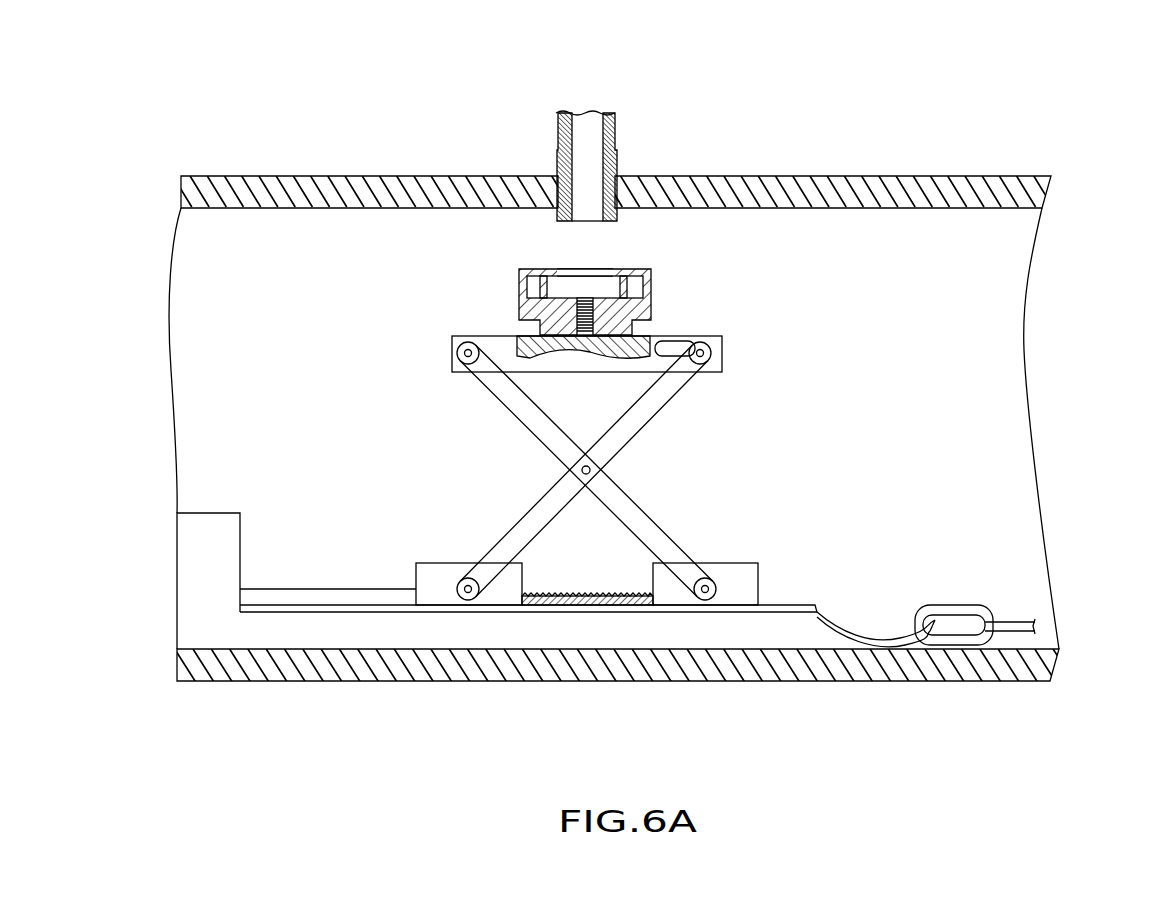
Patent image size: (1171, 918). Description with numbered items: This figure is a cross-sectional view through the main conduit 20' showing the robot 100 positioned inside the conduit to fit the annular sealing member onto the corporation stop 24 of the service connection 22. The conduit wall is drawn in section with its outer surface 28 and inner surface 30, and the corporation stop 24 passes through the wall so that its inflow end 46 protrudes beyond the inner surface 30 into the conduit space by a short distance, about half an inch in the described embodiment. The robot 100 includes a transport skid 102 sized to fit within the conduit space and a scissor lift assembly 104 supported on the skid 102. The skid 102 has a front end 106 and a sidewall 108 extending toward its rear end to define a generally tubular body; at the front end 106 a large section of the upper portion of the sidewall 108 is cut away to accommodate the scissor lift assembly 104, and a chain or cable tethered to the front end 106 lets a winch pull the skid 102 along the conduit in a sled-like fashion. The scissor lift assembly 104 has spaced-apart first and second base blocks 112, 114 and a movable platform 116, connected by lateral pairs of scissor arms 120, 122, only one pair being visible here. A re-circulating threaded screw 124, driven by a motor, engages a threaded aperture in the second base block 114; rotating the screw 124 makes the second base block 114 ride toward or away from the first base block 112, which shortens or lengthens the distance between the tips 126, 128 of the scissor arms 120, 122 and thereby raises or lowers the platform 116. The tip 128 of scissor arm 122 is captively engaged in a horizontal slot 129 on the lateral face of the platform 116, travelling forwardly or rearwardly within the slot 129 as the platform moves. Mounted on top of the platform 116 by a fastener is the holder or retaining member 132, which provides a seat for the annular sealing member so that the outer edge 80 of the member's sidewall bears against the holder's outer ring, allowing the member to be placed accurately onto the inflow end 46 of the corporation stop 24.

The main conduit 20' is at (640, 353).
The tapping fitting 22 is at (594, 58).
The corporation stop 24 is at (558, 123).
The outer surface 28 is at (293, 178).
The inner surface 30 is at (993, 208).
The inflow end 46 is at (560, 222).
The outer edge 80 is at (620, 269).
The robot 100 is at (712, 475).
The transport skid 102 is at (200, 513).
The scissor lift assembly 104 is at (517, 535).
The front end 106 is at (893, 640).
The sidewall 108 is at (447, 633).
The first base block 112 is at (416, 570).
The second base block 114 is at (728, 571).
The movable platform 116 is at (460, 336).
The first scissor arm 120 is at (492, 383).
The second scissor arm 122 is at (655, 400).
The re-circulating threaded screw 124 is at (592, 598).
The tip of first scissor arm 126 is at (455, 350).
The tip of second scissor arm 128 is at (723, 347).
The horizontal slot 129 is at (693, 350).
The holder or retaining member 132 is at (651, 287).